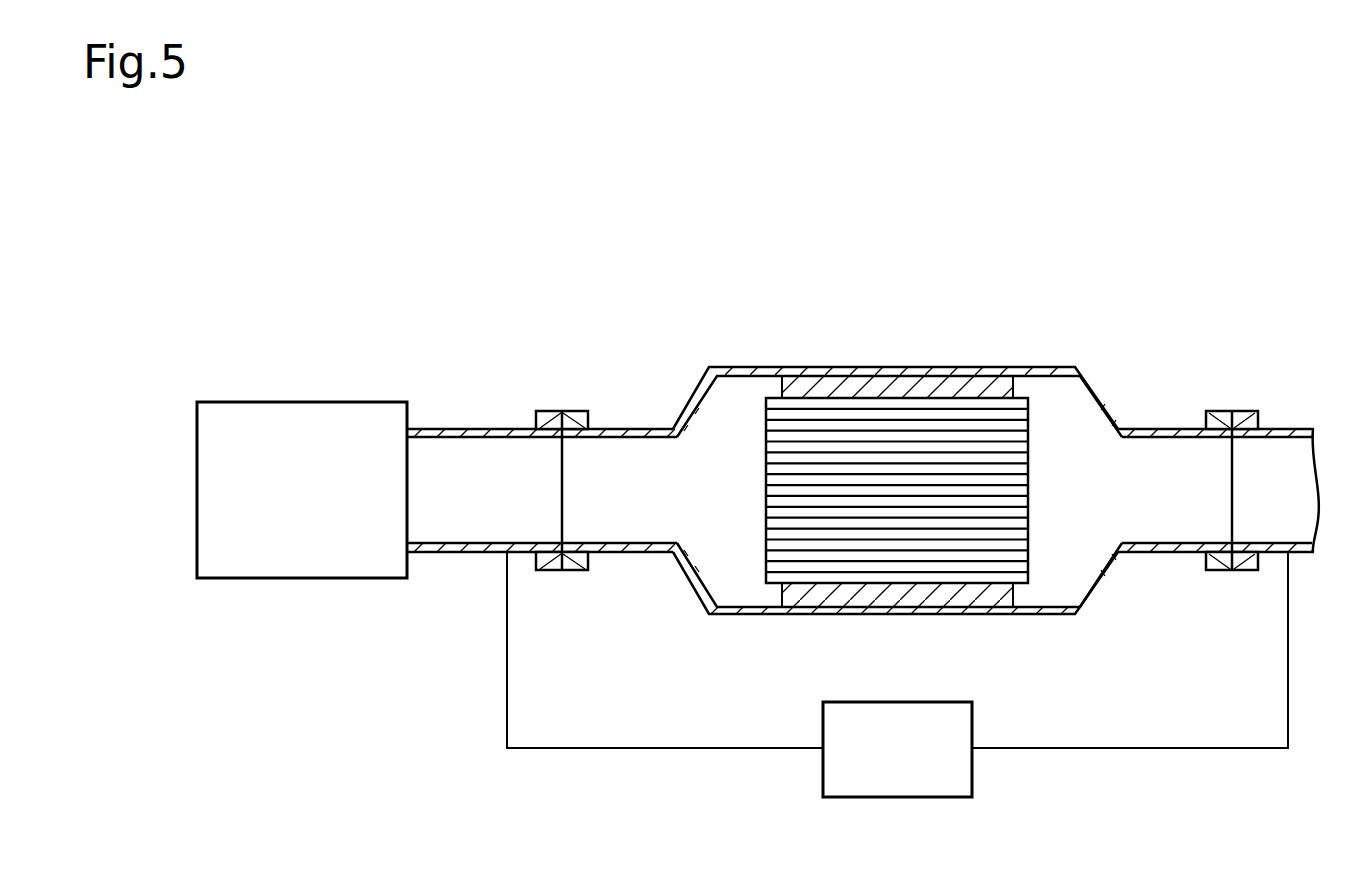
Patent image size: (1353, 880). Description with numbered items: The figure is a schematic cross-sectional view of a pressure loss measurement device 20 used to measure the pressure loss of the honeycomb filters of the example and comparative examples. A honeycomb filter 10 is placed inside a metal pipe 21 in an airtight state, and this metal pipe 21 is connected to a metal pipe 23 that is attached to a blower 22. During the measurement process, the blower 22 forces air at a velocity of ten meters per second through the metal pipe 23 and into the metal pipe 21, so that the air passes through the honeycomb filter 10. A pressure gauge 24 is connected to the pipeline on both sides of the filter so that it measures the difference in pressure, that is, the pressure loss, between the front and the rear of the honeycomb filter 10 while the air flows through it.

The honeycomb filter 10 is at (1030, 425).
The pressure loss measurement device 20 is at (897, 441).
The metal pipe 21 is at (739, 367).
The blower 22 is at (308, 401).
The metal pipe 23 is at (479, 428).
The pressure gauge 24 is at (895, 798).